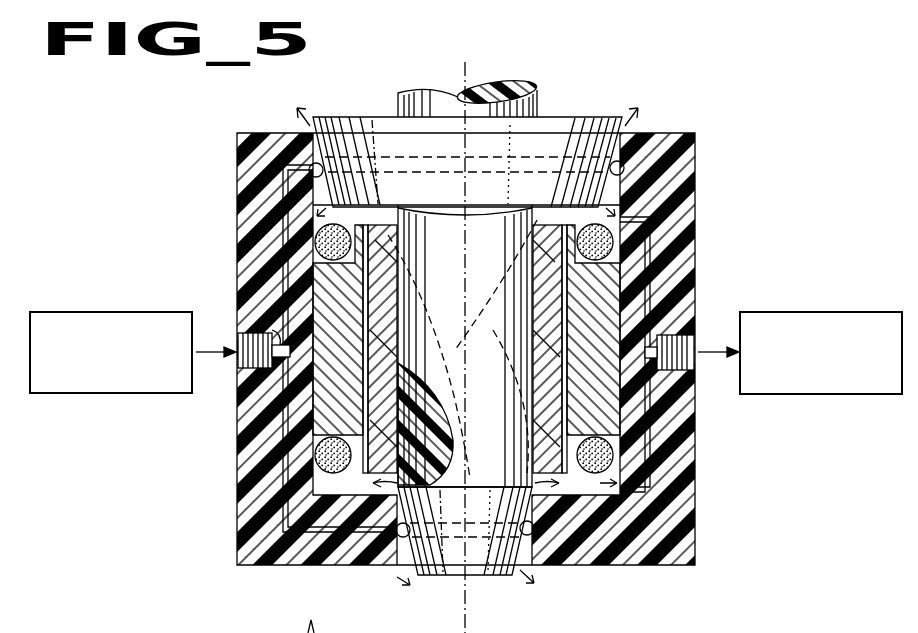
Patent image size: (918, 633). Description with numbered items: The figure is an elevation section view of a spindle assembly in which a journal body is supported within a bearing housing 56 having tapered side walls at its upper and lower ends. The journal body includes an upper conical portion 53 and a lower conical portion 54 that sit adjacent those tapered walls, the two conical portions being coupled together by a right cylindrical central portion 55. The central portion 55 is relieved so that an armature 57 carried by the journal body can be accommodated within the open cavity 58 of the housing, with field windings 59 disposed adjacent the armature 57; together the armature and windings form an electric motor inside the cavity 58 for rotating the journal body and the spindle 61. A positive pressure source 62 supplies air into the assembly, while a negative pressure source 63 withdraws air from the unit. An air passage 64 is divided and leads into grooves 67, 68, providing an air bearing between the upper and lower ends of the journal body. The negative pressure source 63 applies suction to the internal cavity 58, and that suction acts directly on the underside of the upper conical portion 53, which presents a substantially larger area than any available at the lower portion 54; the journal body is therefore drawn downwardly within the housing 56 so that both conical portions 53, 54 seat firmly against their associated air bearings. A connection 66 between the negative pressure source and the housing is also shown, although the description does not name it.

The upper conical portion of the journal body 53 is at (382, 133).
The lower conical portion of the journal body 54 is at (450, 570).
The right cylindrical central portion 55 is at (462, 258).
The bearing housing 56 is at (690, 243).
The armature 57 is at (545, 232).
The open cavity 58 is at (310, 493).
The field windings 59 is at (315, 240).
The spindle 61 is at (505, 88).
The positive pressure source 62 is at (158, 380).
The negative pressure source 63 is at (835, 312).
The air passage 64 is at (273, 330).
The outlet port 66 is at (695, 300).
The groove 67 is at (622, 160).
The groove 68 is at (410, 547).